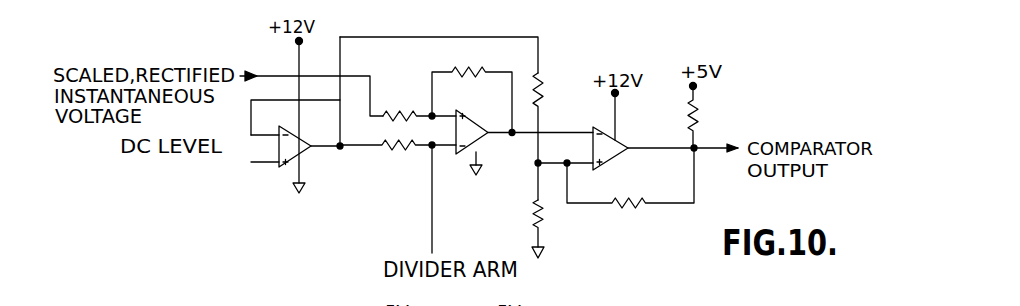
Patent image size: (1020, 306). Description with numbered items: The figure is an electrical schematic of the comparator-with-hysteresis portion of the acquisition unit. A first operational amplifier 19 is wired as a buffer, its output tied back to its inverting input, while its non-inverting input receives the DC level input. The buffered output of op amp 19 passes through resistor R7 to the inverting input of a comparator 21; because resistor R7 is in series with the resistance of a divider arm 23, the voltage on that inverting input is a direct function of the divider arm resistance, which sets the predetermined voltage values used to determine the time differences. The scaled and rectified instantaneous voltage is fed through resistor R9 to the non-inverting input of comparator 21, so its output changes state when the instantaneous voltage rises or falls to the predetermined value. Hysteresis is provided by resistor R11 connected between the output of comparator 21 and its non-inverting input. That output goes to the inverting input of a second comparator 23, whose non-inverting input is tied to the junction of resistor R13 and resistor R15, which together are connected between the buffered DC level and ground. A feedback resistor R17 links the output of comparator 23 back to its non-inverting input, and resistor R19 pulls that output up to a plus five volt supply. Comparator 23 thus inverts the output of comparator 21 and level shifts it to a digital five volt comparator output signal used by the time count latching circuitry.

The first operational amplifier 19 is at (300, 138).
The comparator 21 is at (465, 112).
The second comparator 23 is at (618, 140).
The resistor R7 is at (402, 152).
The resistor R9 is at (420, 112).
The resistor R11 is at (467, 64).
The resistor R13 is at (547, 80).
The resistor R15 is at (544, 217).
The feedback resistor R17 is at (650, 203).
The resistor R19 is at (697, 110).